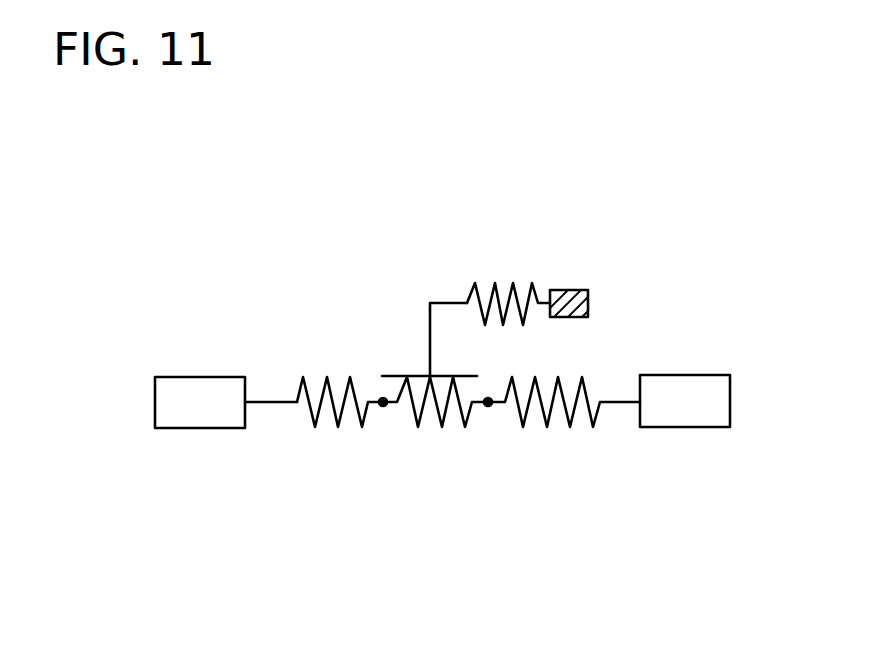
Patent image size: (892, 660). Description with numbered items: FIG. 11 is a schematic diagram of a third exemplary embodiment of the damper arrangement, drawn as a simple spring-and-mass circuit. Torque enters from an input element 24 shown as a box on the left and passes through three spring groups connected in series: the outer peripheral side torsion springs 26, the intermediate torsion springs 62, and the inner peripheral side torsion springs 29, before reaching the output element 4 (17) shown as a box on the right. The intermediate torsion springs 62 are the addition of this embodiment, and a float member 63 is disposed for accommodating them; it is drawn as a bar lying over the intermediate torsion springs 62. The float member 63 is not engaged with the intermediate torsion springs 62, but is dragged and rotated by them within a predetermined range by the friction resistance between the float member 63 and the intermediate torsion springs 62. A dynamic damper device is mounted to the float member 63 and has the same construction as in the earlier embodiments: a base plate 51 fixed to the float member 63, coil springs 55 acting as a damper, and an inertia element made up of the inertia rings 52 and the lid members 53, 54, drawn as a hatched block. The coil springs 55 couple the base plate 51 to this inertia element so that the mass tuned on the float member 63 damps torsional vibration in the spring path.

The first terminal block 24 is at (172, 377).
The outer peripheral side torsion springs 26 is at (338, 428).
The intermediate torsion springs 62 is at (442, 428).
The float member 63 is at (390, 372).
The base plate 51 is at (442, 303).
The coil springs 55 is at (493, 298).
The inertia rings 52 is at (611, 257).
The lid member 53 is at (569, 303).
The lid member 54 is at (572, 290).
The inner peripheral side torsion springs 29 is at (545, 428).
The controller 4 is at (726, 351).
The control unit 17 is at (717, 375).